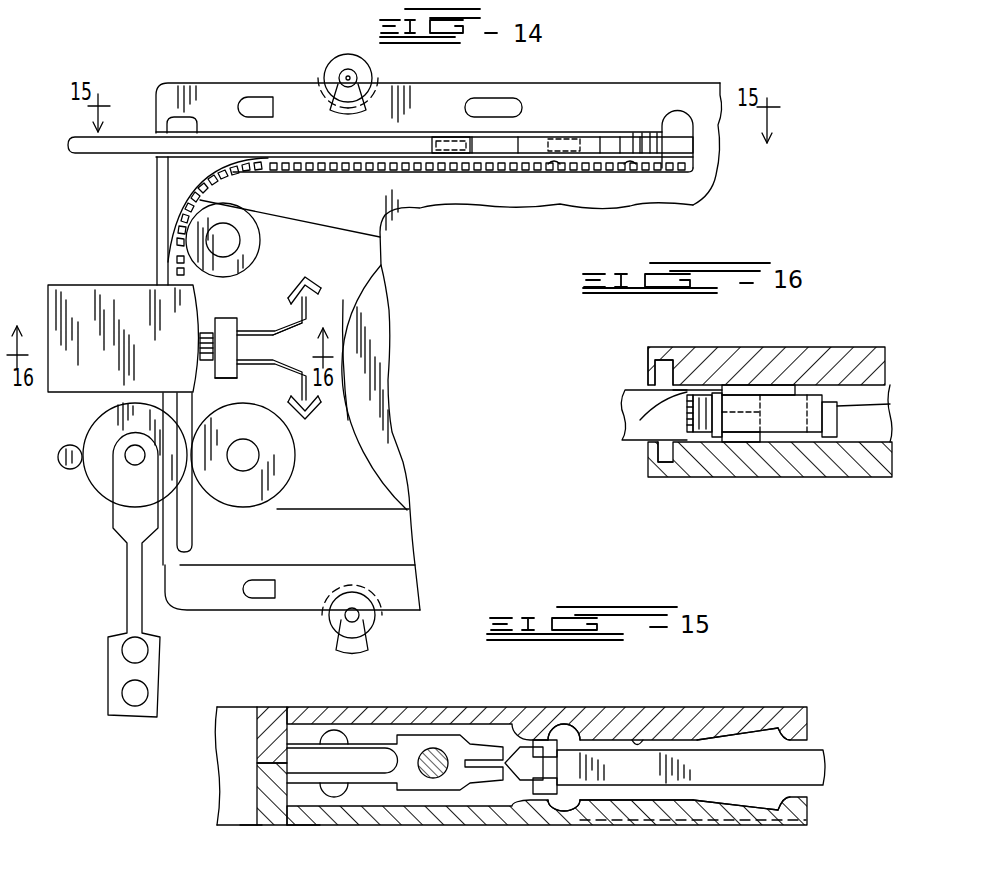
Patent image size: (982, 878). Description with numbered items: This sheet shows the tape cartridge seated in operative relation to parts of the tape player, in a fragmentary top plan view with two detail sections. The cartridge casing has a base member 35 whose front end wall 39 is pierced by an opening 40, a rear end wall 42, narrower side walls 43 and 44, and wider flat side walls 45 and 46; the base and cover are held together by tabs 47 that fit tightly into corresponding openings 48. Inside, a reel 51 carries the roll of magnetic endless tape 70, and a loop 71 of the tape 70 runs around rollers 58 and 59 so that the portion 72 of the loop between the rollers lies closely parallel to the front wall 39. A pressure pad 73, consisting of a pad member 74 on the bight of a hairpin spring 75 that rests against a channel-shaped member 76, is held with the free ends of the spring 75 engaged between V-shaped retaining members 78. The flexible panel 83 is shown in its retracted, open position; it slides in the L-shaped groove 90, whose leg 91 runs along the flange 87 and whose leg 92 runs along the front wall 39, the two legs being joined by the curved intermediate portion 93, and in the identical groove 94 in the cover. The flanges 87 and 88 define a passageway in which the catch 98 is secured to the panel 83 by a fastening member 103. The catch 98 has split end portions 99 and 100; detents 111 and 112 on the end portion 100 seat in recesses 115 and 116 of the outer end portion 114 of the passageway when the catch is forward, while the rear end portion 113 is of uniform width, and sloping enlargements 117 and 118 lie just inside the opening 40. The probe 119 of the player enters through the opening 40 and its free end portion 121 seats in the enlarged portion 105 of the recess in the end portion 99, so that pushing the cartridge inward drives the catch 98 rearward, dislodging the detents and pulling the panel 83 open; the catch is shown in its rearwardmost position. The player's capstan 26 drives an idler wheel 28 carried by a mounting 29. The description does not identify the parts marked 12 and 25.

In FIG. 14, the body 12 is at (98, 298).
In FIG. 16, the body 12 is at (622, 396).
In FIG. 14, the roller 25 is at (325, 80).
In FIG. 14, the capstan 26 is at (74, 444).
In FIG. 14, the idler wheel 28 is at (100, 496).
In FIG. 14, the mounting 29 is at (128, 580).
In FIG. 14, the base member 35 is at (690, 84).
In FIG. 16, the front end wall 39 is at (649, 372).
In FIG. 15, the front end wall 39 is at (806, 726).
In FIG. 14, the opening 40 is at (162, 134).
In FIG. 15, the opening 40 is at (802, 793).
In FIG. 15, the end wall 42 is at (257, 740).
In FIG. 14, the side wall 43 is at (560, 83).
In FIG. 14, the side wall 44 is at (391, 612).
In FIG. 16, the side wall 45 is at (823, 455).
In FIG. 15, the side wall 45 is at (502, 822).
In FIG. 16, the side wall 46 is at (837, 360).
In FIG. 15, the side wall 46 is at (410, 708).
In FIG. 14, the tabs 47 is at (255, 99).
In FIG. 14, the openings 48 is at (488, 100).
In FIG. 14, the reel 51 is at (352, 318).
In FIG. 14, the roller 58 is at (250, 255).
In FIG. 14, the roller 59 is at (275, 486).
In FIG. 14, the magnetic endless tape 70 is at (376, 244).
In FIG. 16, the magnetic endless tape 70 is at (623, 440).
In FIG. 14, the loop 71 is at (330, 226).
In FIG. 14, the portion of the loop 72 is at (190, 286).
In FIG. 16, the portion of the loop 72 is at (687, 410).
In FIG. 14, the pressure pad 73 is at (240, 331).
In FIG. 16, the pressure pad 73 is at (748, 392).
In FIG. 14, the pad member 74 is at (204, 333).
In FIG. 16, the pad member 74 is at (703, 403).
In FIG. 14, the hairpin spring 75 is at (266, 337).
In FIG. 16, the hairpin spring 75 is at (795, 387).
In FIG. 14, the channel-shaped member 76 is at (233, 372).
In FIG. 16, the channel-shaped member 76 is at (750, 440).
In FIG. 14, the V-shaped retaining members 78 is at (321, 291).
In FIG. 16, the V-shaped retaining members 78 is at (835, 420).
In FIG. 14, the panel 83 is at (182, 198).
In FIG. 14, the flange 87 is at (624, 154).
In FIG. 15, the flange 87 is at (257, 790).
In FIG. 15, the flange 88 is at (258, 766).
In FIG. 14, the groove 90 is at (633, 171).
In FIG. 16, the groove 90 is at (667, 460).
In FIG. 14, the leg 91 is at (558, 170).
In FIG. 14, the leg 92 is at (182, 546).
In FIG. 14, the curved intermediate portion 93 is at (214, 176).
In FIG. 16, the groove 94 is at (665, 368).
In FIG. 14, the catch 98 is at (447, 135).
In FIG. 15, the catch 98 is at (455, 790).
In FIG. 15, the end portion 99 is at (532, 811).
In FIG. 15, the end portion 100 is at (340, 801).
In FIG. 14, the fastening member 103 is at (564, 146).
In FIG. 15, the fastening member 103 is at (428, 778).
In FIG. 15, the enlarged intermediate portion 105 is at (510, 737).
In FIG. 15, the detent 111 is at (297, 826).
In FIG. 15, the detent 112 is at (334, 730).
In FIG. 15, the rear end portion 113 is at (253, 826).
In FIG. 15, the end portion 114 is at (640, 738).
In FIG. 15, the recess 115 is at (581, 812).
In FIG. 15, the recess 116 is at (566, 726).
In FIG. 15, the sloping enlargement 117 is at (752, 809).
In FIG. 15, the sloping enlargement 118 is at (732, 739).
In FIG. 14, the probe 119 is at (78, 139).
In FIG. 15, the probe 119 is at (829, 760).
In FIG. 15, the free end portion 121 is at (546, 740).